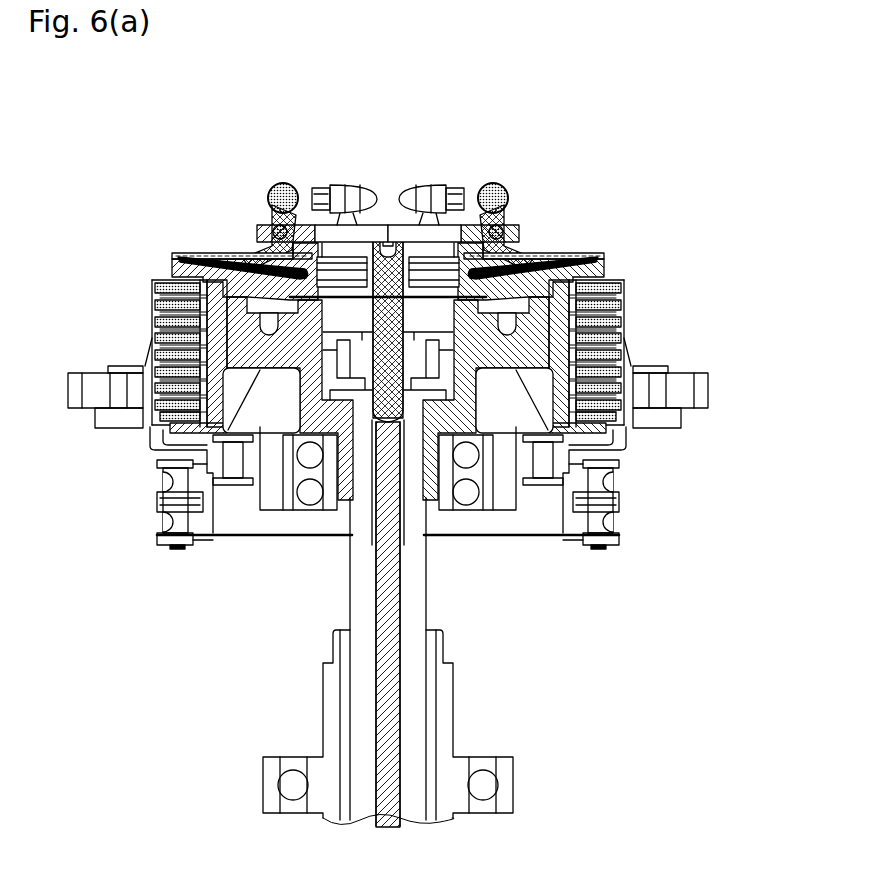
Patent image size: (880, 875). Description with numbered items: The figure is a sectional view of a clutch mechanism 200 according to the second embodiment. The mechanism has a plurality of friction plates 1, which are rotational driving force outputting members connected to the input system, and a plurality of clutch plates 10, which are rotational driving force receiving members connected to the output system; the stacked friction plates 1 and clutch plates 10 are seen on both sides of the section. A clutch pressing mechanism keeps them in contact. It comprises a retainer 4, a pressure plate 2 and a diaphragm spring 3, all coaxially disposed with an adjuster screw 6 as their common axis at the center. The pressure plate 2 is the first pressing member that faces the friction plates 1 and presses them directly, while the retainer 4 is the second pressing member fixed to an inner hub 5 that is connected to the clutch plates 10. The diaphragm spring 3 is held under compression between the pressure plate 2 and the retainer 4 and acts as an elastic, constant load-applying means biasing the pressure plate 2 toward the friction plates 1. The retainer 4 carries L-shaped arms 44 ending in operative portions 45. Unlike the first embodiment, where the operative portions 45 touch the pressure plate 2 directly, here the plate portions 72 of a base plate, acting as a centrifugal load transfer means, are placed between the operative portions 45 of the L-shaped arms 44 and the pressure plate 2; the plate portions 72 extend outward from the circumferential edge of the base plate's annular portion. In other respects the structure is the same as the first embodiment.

The clutch mechanism 200 is at (641, 166).
The friction plates 1 is at (624, 293).
The clutch plates 10 is at (624, 310).
The pressure plate 2 is at (604, 268).
The diaphragm spring 3 is at (590, 262).
The retainer 4 is at (524, 228).
The inner hub 5 is at (533, 290).
The adjuster screw 6 is at (387, 238).
The L-shaped arms 44 is at (276, 219).
The operative portions 45 is at (252, 262).
The plate portions 72 is at (222, 257).